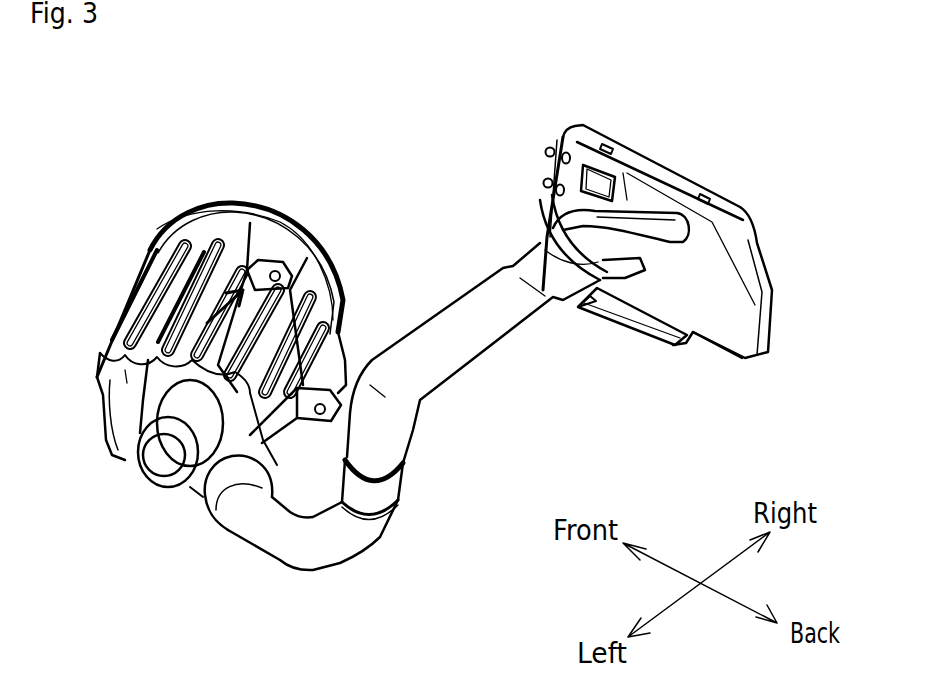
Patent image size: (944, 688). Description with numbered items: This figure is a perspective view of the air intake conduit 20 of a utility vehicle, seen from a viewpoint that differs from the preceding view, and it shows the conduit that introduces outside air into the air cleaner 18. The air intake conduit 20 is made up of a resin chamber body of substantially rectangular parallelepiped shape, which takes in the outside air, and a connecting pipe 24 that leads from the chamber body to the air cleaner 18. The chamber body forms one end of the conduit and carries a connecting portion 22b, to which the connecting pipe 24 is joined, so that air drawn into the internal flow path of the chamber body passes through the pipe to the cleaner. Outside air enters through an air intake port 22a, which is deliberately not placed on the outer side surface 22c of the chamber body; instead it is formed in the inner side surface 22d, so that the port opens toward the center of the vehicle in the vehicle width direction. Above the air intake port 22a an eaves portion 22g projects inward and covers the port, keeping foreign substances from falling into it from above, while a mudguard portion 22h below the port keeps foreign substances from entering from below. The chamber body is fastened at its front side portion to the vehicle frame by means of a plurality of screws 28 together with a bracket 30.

The air cleaner 18 is at (203, 232).
The air intake conduit 20 is at (410, 138).
The air intake port 22a is at (590, 180).
The connecting portion 22b is at (567, 260).
The outer side surface 22c is at (702, 187).
The inner side surface 22d is at (717, 337).
The eaves portion 22g is at (600, 114).
The mudguard portion 22h is at (630, 327).
The connecting pipe 24 is at (453, 315).
The screws 28 is at (550, 143).
The bracket 30 is at (673, 232).